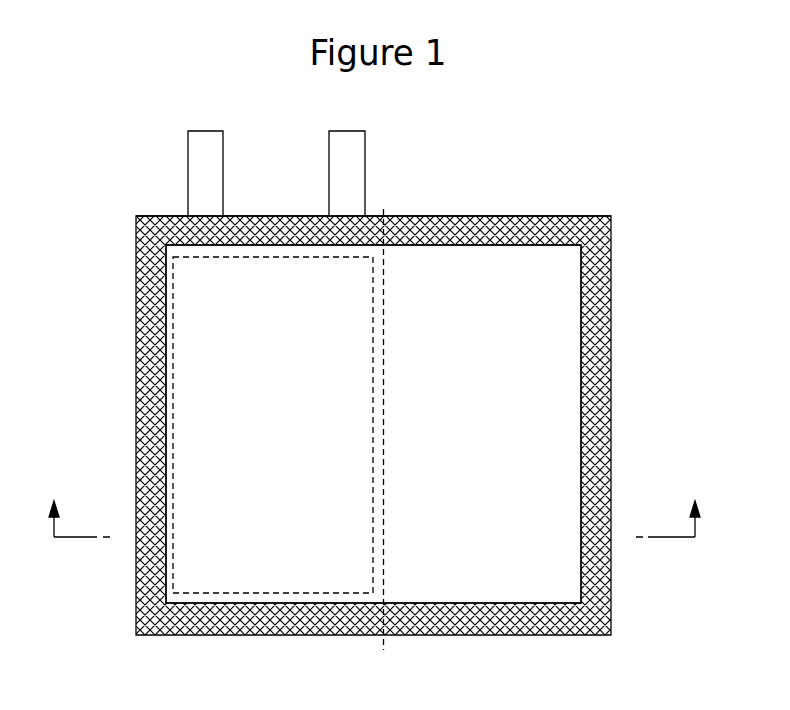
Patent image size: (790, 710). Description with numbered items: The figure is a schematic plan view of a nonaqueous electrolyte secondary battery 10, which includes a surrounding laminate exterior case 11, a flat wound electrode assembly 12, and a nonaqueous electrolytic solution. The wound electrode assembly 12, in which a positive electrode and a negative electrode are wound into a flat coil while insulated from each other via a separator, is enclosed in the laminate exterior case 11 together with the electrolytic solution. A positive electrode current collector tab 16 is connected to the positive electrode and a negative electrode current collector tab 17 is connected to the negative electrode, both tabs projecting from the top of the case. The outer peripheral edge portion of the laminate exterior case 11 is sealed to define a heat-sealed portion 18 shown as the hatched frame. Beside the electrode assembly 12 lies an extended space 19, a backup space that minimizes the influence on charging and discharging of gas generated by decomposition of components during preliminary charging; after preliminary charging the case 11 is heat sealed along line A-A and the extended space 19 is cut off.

The nonaqueous electrolyte secondary battery 10 is at (68, 132).
The surrounding laminate exterior case 11 is at (611, 296).
The flat wound electrode assembly 12 is at (220, 325).
The positive electrode current collector tab 16 is at (223, 158).
The negative electrode current collector tab 17 is at (365, 158).
The heat-sealed portion 18 is at (611, 232).
The extended space 19 is at (457, 293).